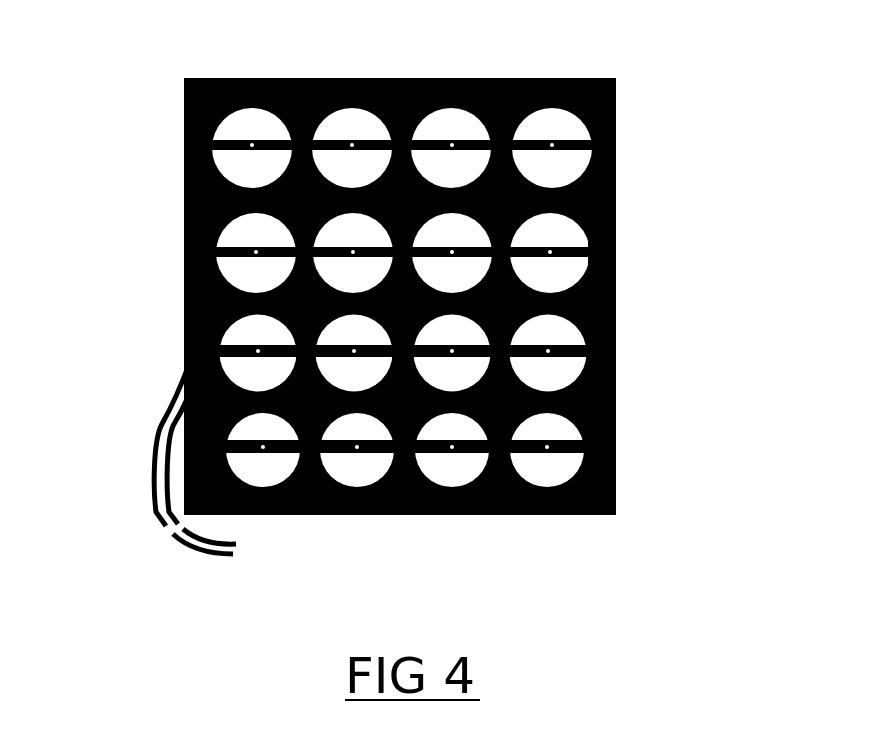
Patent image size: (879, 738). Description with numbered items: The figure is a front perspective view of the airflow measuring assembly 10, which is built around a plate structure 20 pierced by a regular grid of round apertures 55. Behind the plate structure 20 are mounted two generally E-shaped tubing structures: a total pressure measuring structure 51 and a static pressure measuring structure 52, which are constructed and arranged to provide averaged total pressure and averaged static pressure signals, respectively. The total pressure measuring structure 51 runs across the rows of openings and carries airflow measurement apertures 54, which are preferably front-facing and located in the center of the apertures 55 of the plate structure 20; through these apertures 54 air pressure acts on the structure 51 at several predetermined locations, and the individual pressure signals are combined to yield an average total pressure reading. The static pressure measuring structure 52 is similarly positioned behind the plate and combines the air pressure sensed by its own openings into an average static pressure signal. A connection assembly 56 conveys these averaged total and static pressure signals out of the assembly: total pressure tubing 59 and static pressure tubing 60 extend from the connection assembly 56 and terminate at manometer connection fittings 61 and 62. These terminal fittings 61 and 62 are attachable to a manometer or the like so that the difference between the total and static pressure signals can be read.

The airflow measuring assembly 10 is at (672, 163).
The plate structure 20 is at (186, 222).
The total pressure measuring structure 51 is at (210, 150).
The static pressure measuring structure 52 is at (614, 221).
The airflow measurement apertures 54 is at (553, 140).
The apertures of the plate structure 55 is at (224, 116).
The connection assembly 56 is at (208, 292).
The total pressure tubing 59 is at (166, 422).
The static pressure tubing 60 is at (153, 462).
The terminal fitting 61 is at (240, 543).
The terminal fitting 62 is at (230, 553).